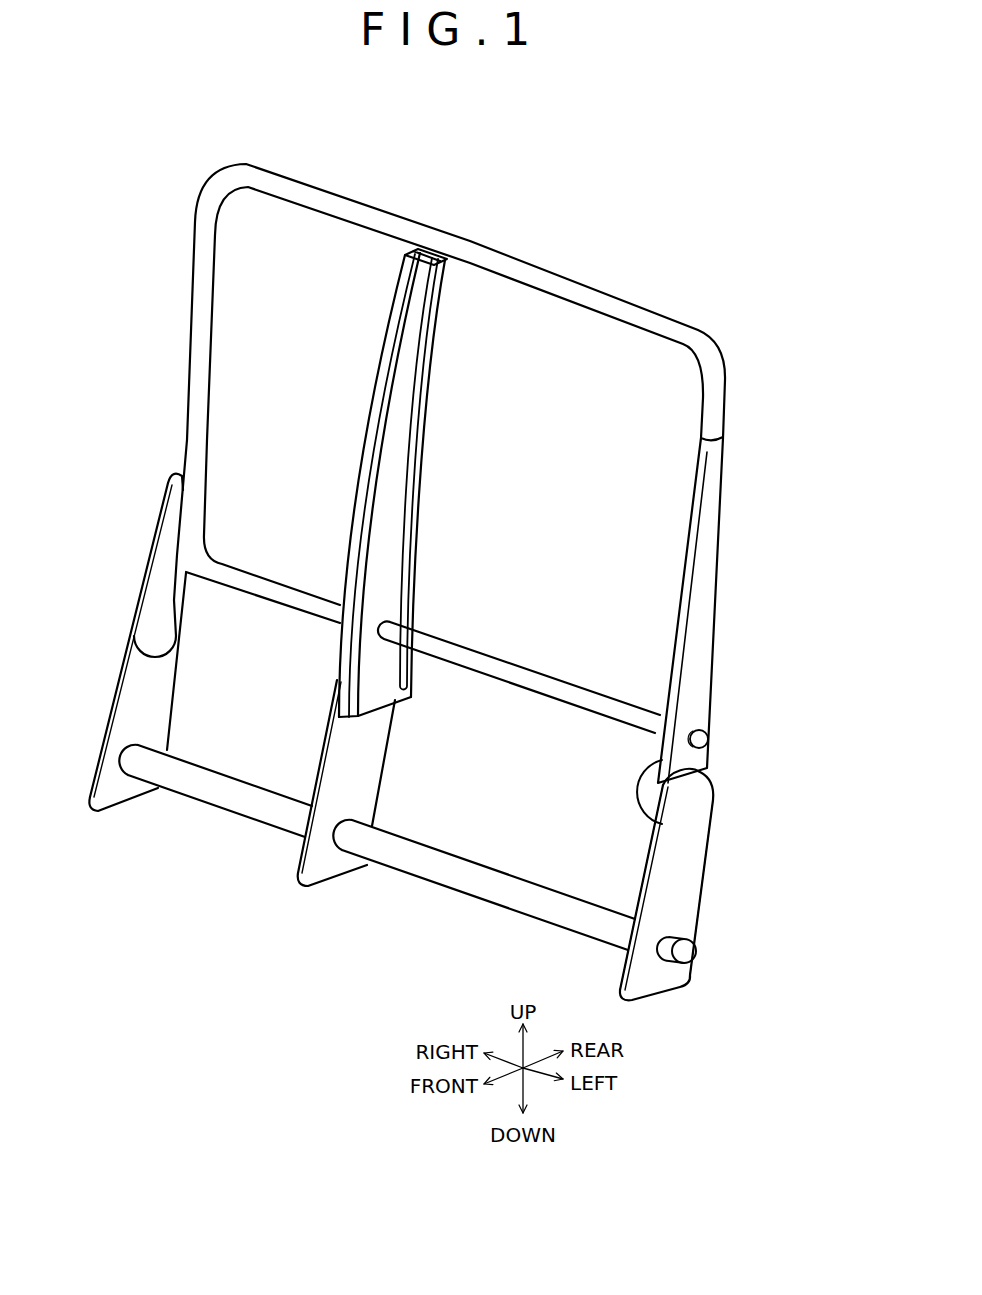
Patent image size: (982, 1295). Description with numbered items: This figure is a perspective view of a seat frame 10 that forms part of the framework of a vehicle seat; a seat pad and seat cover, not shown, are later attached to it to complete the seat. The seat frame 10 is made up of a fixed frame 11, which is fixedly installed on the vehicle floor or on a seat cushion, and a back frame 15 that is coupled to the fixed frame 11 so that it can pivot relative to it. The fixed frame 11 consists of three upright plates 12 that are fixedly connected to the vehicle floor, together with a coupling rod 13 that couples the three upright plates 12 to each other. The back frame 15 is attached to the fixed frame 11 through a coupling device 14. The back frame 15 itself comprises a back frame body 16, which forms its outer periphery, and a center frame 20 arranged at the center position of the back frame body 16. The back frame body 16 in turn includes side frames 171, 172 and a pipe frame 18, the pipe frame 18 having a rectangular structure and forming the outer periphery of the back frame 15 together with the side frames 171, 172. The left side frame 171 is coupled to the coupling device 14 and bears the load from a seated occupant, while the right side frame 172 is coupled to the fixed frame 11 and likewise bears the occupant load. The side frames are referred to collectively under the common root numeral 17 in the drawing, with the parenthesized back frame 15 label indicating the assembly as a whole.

The seat frame 10 is at (547, 227).
The fixed frame 11 is at (718, 856).
The upright plate 12 is at (160, 715).
The coupling rod 13 is at (395, 860).
The coupling device 14 is at (640, 798).
The back frame 15 is at (740, 581).
The back frame body 16 is at (733, 461).
The left side tube 17 is at (413, 486).
The pipe frame 18 is at (613, 300).
The center frame 20 is at (438, 459).
The left side frame 171 is at (708, 570).
The right side frame 172 is at (162, 567).